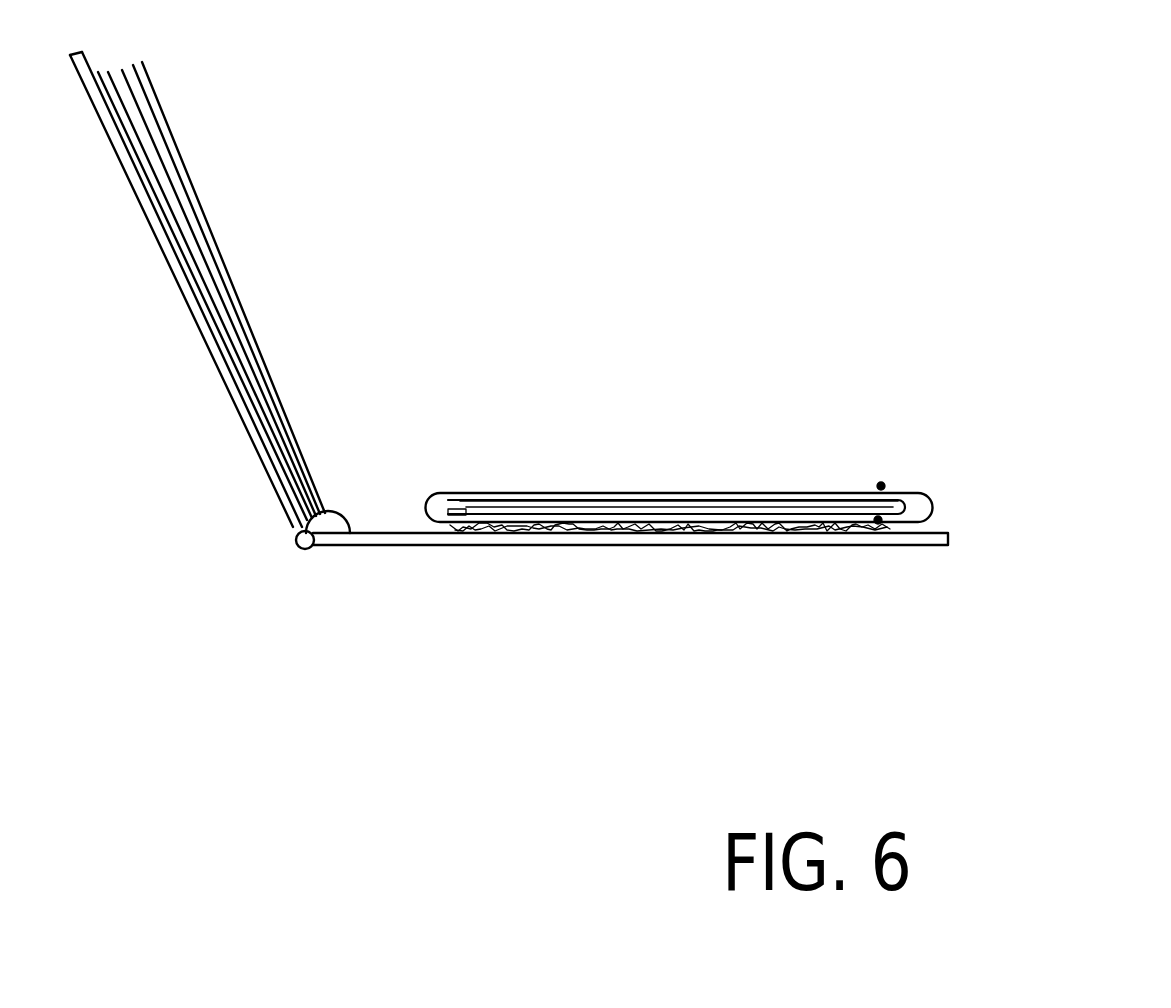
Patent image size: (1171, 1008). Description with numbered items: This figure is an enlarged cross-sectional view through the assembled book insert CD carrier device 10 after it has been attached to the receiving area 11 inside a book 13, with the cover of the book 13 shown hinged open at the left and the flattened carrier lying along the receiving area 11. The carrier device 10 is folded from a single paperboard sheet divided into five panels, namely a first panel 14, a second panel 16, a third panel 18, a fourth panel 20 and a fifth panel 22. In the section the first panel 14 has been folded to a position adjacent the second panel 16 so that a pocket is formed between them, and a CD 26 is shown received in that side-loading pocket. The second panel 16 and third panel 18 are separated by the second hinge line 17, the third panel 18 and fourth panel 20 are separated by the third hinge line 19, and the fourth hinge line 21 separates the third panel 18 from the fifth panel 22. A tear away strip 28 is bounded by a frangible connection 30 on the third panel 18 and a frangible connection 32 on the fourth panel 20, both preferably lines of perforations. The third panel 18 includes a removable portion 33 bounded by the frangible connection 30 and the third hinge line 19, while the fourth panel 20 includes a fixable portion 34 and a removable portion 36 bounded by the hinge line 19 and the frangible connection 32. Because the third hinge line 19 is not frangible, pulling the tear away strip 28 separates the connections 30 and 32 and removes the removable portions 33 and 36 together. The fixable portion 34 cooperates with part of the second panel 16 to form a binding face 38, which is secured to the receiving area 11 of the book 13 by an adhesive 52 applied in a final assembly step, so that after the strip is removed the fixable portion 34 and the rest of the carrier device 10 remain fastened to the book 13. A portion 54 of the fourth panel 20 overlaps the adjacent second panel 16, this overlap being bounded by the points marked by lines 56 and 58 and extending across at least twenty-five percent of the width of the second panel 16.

The book insert CD carrier device 10 is at (536, 478).
The receiving area 11 is at (452, 543).
The book 13 is at (275, 482).
The first panel 14 is at (690, 490).
The second panel 16 is at (493, 530).
The second hinge line 17 is at (412, 498).
The third panel 18 is at (608, 492).
The third hinge line 19 is at (933, 505).
The fourth panel 20 is at (860, 525).
The fourth hinge line 21 is at (575, 497).
The fifth panel 22 is at (817, 490).
The CD 26 is at (455, 495).
The tear away strip 28 is at (898, 487).
The frangible connection 30 is at (881, 486).
The frangible connection 32 is at (878, 520).
The removable portion 33 is at (920, 490).
The fixable portion 34 is at (797, 525).
The removable portion 36 is at (935, 545).
The binding face 38 is at (745, 528).
The adhesive 52 is at (572, 528).
The portion 54 is at (838, 525).
The line 56 is at (900, 545).
The line 58 is at (715, 520).